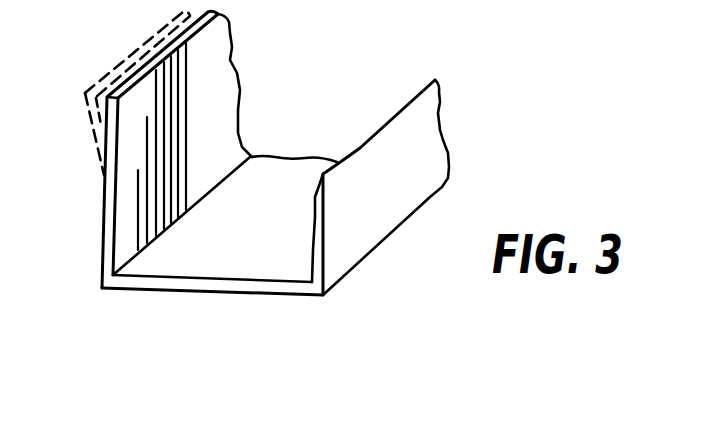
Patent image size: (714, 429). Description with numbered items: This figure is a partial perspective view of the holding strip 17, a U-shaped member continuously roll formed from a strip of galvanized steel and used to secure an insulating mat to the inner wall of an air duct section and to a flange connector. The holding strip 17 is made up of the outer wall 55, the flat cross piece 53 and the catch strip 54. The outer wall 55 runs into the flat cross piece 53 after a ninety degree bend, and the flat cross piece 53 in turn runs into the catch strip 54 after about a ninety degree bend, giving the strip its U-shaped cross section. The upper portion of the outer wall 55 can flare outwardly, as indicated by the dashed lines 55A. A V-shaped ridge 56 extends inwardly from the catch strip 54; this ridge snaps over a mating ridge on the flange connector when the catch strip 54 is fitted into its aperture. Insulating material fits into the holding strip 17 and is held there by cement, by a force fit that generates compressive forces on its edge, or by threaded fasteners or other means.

The holding strip 17 is at (312, 92).
The flat cross piece 53 is at (221, 288).
The catch strip 54 is at (427, 127).
The outer wall 55 is at (104, 211).
The dashed lines 55A is at (125, 58).
The V-shaped ridge 56 is at (314, 200).